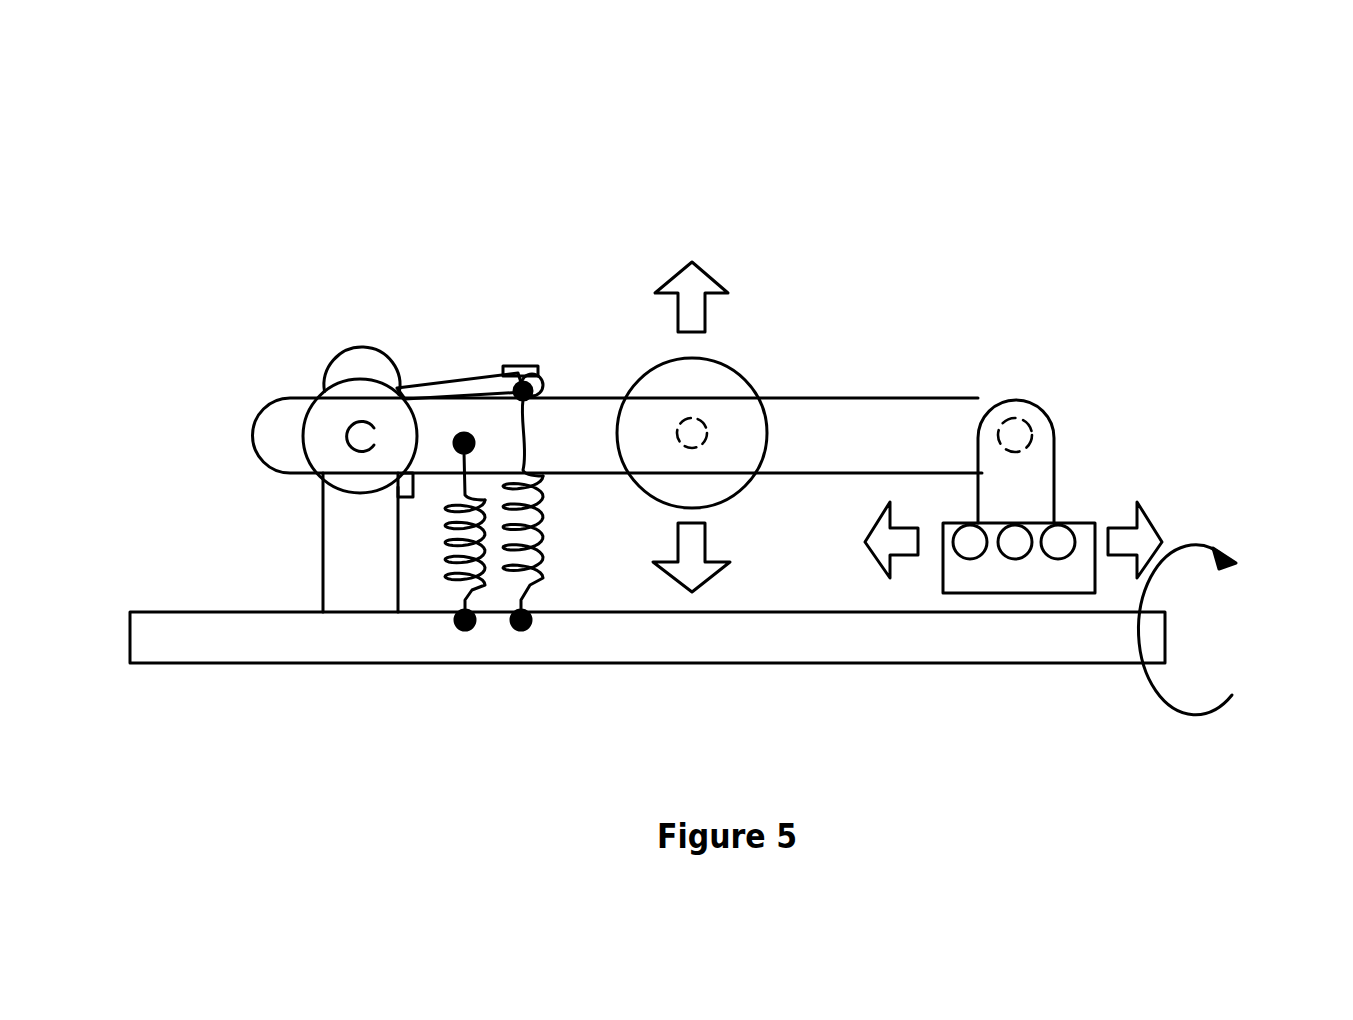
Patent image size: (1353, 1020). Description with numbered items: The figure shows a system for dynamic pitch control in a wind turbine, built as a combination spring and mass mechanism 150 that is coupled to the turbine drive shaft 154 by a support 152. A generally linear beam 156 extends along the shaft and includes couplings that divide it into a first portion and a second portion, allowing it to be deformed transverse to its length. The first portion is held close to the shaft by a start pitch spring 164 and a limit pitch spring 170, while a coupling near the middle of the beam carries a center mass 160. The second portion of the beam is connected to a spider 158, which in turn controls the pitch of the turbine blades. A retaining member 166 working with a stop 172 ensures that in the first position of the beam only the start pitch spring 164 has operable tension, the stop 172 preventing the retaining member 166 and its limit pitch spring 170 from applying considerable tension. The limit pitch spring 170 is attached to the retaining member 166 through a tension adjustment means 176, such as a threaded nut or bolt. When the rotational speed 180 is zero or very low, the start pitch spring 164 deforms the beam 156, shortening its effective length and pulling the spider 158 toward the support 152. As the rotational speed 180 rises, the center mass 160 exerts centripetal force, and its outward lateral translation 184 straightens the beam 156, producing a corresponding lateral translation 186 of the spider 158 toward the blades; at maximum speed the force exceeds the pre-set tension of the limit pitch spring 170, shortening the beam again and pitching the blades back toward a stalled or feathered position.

The combination spring and mass mechanism 150 is at (990, 750).
The support 152 is at (360, 542).
The turbine drive shaft 154 is at (647, 637).
The beam 156 is at (618, 435).
The spider 158 is at (1019, 558).
The center mass 160 is at (740, 403).
The start pitch spring 164 is at (457, 628).
The retaining member 166 is at (468, 378).
The limit pitch spring 170 is at (522, 628).
The stop 172 is at (398, 483).
The tension adjustment means 176 is at (518, 367).
The rotational speed 180 is at (1242, 630).
The lateral translation 184 is at (739, 382).
The lateral translation 186 is at (1061, 492).